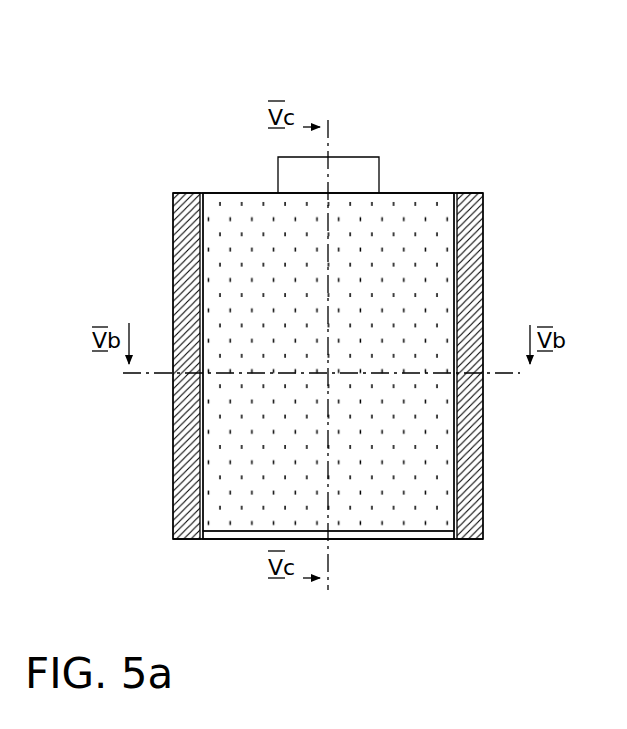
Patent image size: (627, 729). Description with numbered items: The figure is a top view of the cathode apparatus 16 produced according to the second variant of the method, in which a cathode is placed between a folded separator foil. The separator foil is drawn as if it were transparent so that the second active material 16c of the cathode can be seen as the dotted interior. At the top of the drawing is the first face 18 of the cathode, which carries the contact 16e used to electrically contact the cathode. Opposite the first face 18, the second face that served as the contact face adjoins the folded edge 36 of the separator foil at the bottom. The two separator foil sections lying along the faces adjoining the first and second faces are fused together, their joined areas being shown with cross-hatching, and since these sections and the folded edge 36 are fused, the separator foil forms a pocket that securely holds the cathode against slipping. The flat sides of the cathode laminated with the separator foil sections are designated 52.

The cathode apparatus 16 is at (215, 117).
The first face 18 is at (237, 192).
The contact 16e is at (367, 157).
The second active material 16c is at (425, 215).
The laminated flat sides of the cathode 52 is at (425, 440).
The folded edge 36 is at (426, 550).